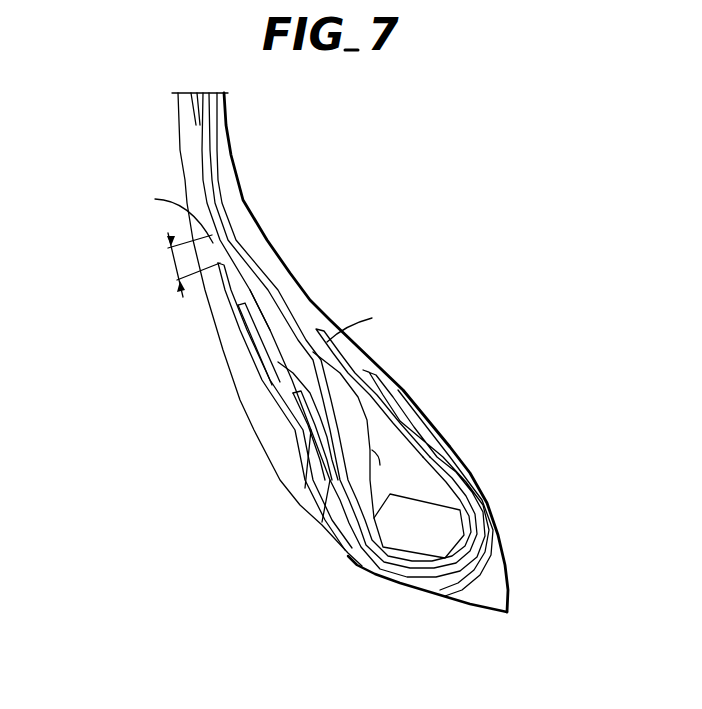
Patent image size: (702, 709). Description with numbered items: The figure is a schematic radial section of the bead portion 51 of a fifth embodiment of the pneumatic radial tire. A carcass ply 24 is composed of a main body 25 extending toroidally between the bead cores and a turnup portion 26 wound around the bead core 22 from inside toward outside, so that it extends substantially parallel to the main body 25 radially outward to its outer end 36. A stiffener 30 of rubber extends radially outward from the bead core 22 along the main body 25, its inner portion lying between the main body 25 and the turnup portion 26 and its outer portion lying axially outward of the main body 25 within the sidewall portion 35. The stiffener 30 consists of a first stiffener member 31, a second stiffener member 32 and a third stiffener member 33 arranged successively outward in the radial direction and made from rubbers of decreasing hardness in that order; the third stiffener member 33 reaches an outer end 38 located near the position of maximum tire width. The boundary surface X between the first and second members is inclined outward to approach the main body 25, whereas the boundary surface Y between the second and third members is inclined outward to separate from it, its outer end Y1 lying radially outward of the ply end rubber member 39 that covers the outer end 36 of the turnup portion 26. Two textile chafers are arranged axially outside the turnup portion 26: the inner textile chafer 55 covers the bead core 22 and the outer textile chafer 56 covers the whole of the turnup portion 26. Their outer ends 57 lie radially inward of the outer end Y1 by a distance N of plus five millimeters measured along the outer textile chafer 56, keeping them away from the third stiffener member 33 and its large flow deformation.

The bead core 22 is at (447, 526).
The carcass ply 24 is at (270, 272).
The main body 25 is at (423, 460).
The turnup portion 26 is at (322, 522).
The stiffener 30 is at (272, 346).
The first stiffener member 31 is at (425, 493).
The second stiffener member 32 is at (305, 488).
The third stiffener member 33 is at (273, 310).
The sidewall portion 35 is at (175, 144).
The outer end of the turnup portion 36 is at (283, 420).
The outer end of the third stiffener member 38 is at (193, 101).
The ply end rubber member 39 is at (270, 383).
The bead portion 51 is at (430, 392).
The inner textile chafer 55 is at (393, 579).
The outer textile chafer 56 is at (282, 408).
The outer ends of the textile chafers 57 is at (218, 263).
The boundary surface between the first and second stiffener members X is at (352, 435).
The boundary surface between the second and third stiffener members Y is at (359, 321).
The outer end of the boundary surface Y Y1 is at (167, 214).
The distance in radial direction N is at (184, 265).